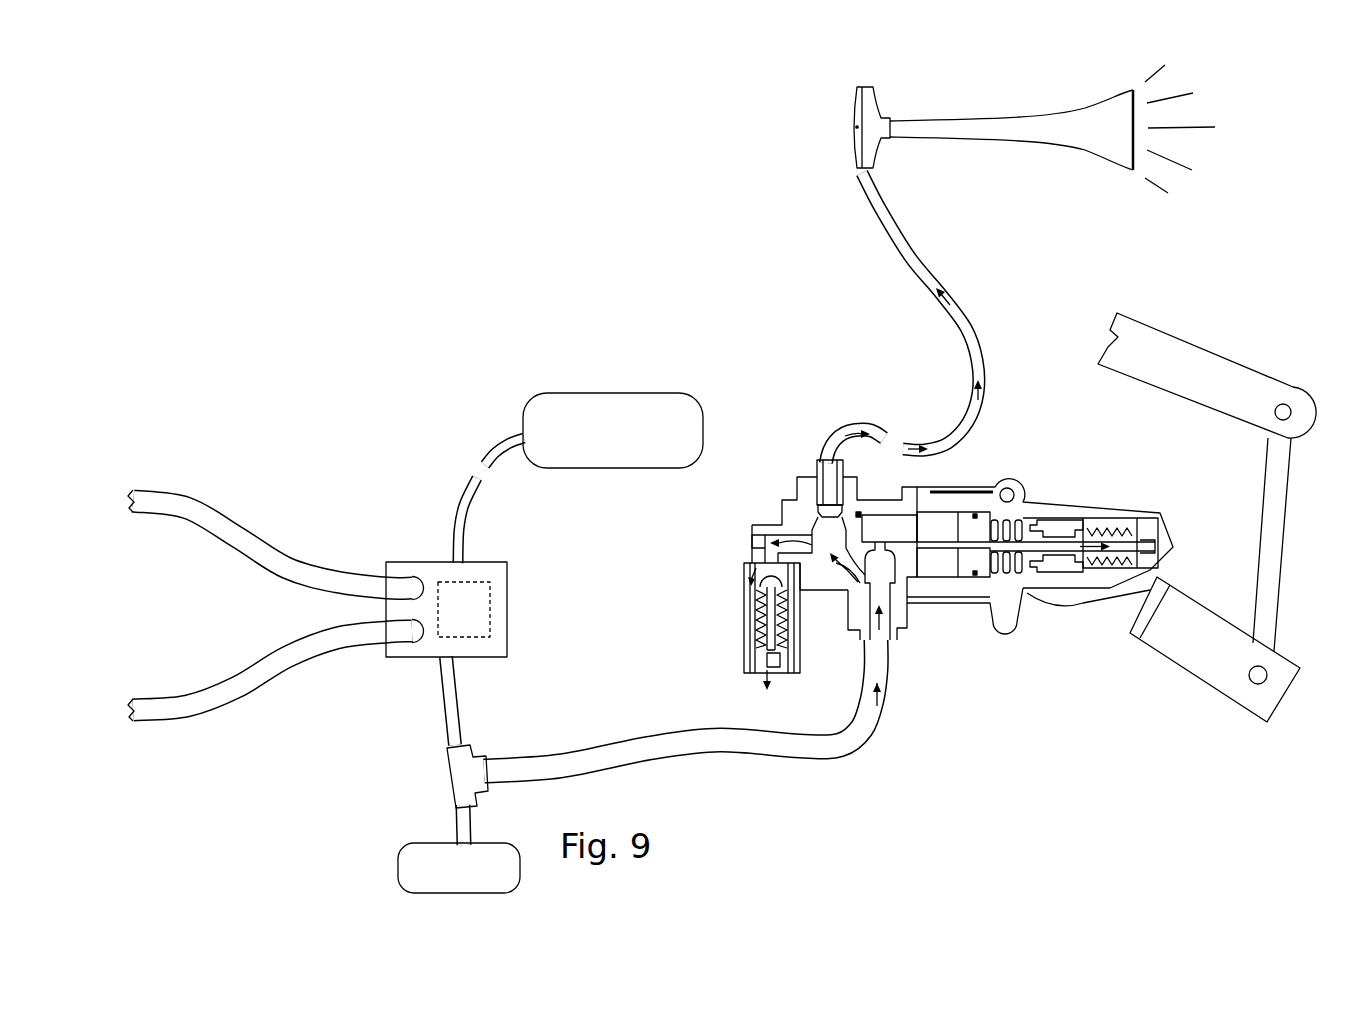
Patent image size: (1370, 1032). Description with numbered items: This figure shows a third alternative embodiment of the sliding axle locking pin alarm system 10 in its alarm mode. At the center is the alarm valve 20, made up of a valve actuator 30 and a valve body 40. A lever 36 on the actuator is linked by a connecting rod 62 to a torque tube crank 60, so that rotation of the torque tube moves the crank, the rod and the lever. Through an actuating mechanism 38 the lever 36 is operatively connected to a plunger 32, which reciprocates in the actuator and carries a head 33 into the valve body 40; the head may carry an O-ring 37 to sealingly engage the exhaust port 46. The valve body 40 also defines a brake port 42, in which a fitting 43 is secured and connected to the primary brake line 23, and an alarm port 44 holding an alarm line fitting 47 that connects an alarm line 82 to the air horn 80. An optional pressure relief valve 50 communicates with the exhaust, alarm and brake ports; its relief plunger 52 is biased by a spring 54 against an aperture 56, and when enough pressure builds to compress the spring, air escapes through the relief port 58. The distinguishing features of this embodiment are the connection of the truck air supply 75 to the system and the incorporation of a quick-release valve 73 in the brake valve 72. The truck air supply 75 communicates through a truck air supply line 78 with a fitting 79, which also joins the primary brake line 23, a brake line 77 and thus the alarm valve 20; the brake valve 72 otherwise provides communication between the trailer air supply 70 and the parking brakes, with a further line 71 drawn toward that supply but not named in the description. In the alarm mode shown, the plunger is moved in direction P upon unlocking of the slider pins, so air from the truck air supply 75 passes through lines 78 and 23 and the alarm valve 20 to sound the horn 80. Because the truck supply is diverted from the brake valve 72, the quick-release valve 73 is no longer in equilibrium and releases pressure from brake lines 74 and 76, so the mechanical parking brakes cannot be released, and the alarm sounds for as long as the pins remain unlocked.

The alarm system 10 is at (787, 376).
The alarm valve 20 is at (955, 618).
The air line 23 is at (845, 750).
The valve actuator 30 is at (958, 489).
The plunger 32 is at (953, 548).
The head 33 is at (848, 556).
The lever 36 is at (1232, 697).
The O-ring 37 is at (858, 510).
The actuating mechanism 38 is at (1059, 575).
The valve body 40 is at (785, 498).
The brake port 42 is at (908, 630).
The fitting 43 is at (892, 640).
The alarm port 44 is at (815, 478).
The exhaust port 46 is at (820, 522).
The alarm line fitting 47 is at (822, 462).
The pressure relief valve 50 is at (746, 590).
The relief plunger 52 is at (772, 614).
The spring 54 is at (762, 632).
The aperture 56 is at (762, 540).
The relief port 58 is at (763, 676).
The torque tube crank 60 is at (1215, 375).
The connecting rod 62 is at (1270, 538).
The air supply 70 is at (587, 468).
The trailer supply line 71 is at (468, 527).
The brake valve 72 is at (468, 658).
The quick-release valve 73 is at (485, 600).
The brake line 74 is at (183, 500).
The truck air supply 75 is at (398, 869).
The brake line 76 is at (207, 698).
The brake line 77 is at (438, 693).
The truck air supply line 78 is at (470, 826).
The fitting 79 is at (450, 765).
The air horn 80 is at (882, 108).
The alarm line 82 is at (852, 432).
The direction P is at (1076, 541).